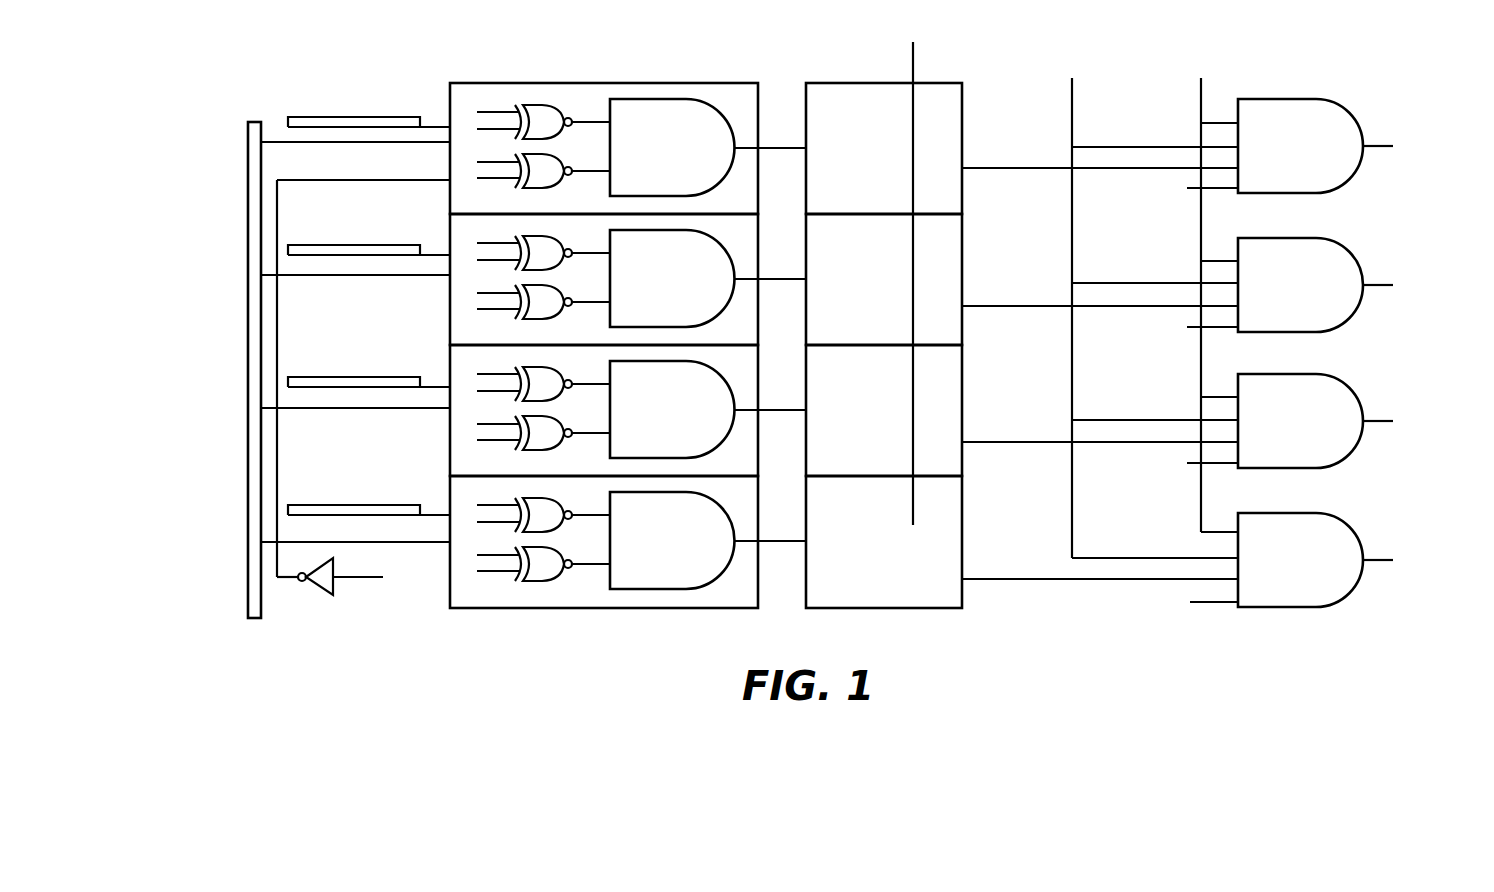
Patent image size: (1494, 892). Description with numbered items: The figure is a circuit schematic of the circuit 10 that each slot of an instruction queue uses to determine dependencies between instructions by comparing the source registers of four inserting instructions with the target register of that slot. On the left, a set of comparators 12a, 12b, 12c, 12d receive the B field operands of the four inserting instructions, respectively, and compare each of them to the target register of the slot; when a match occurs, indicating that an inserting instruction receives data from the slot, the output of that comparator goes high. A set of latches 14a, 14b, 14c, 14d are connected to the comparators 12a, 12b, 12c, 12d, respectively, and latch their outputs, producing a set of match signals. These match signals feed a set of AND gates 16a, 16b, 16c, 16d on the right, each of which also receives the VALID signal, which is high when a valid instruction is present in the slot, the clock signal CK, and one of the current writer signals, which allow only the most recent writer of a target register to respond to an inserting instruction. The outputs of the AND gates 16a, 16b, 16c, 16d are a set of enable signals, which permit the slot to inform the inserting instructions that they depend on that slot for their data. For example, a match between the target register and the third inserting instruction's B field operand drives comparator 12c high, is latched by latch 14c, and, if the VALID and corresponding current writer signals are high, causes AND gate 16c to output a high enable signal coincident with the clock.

The circuit 10 is at (448, 26).
The comparator 12a is at (460, 83).
The comparator 12b is at (450, 335).
The comparator 12c is at (450, 463).
The comparator 12d is at (456, 612).
The latch 14a is at (884, 148).
The latch 14b is at (884, 279).
The latch 14c is at (884, 410).
The latch 14d is at (884, 542).
The AND gate 16a is at (1352, 110).
The AND gate 16b is at (1352, 249).
The AND gate 16c is at (1352, 385).
The AND gate 16d is at (1352, 524).